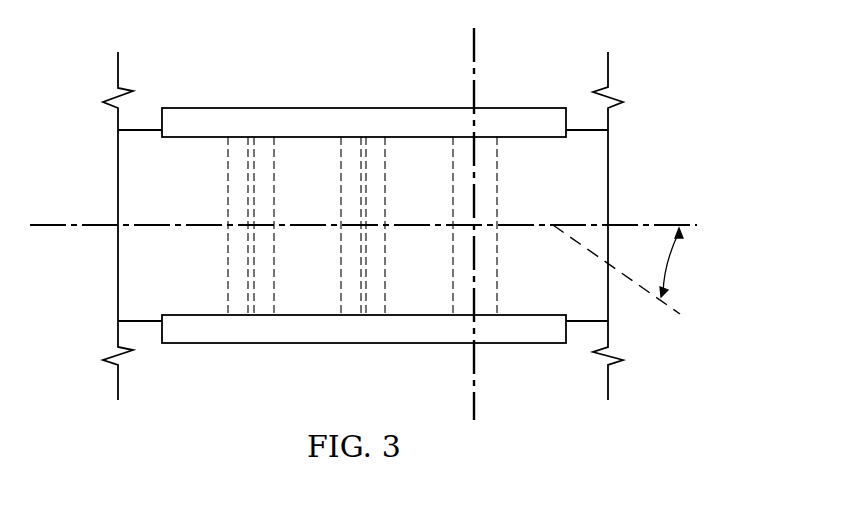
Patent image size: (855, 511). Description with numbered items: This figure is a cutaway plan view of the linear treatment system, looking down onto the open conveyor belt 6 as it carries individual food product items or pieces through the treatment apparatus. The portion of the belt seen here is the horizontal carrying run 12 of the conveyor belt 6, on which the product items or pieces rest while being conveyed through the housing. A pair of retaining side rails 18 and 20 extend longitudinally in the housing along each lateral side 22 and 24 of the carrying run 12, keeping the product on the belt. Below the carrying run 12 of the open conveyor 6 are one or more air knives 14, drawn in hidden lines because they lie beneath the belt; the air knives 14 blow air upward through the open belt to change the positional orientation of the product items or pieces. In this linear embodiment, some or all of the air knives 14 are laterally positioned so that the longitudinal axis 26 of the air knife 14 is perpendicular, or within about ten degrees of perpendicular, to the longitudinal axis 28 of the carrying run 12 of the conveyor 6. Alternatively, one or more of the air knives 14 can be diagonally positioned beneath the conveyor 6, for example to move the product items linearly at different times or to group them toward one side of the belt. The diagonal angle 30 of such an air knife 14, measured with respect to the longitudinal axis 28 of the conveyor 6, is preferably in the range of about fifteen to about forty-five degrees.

The open conveyor belt 6 is at (334, 226).
The horizontal carrying run 12 is at (116, 180).
The air knives 14 is at (226, 178).
The retaining side rail 18 is at (363, 107).
The retaining side rail 20 is at (363, 344).
The lateral side of the carrying run 22 is at (140, 128).
The lateral side of the carrying run 24 is at (137, 323).
The longitudinal axis of the air knife 26 is at (476, 50).
The longitudinal axis of the conveyor 28 is at (650, 223).
The diagonal angle 30 is at (669, 262).